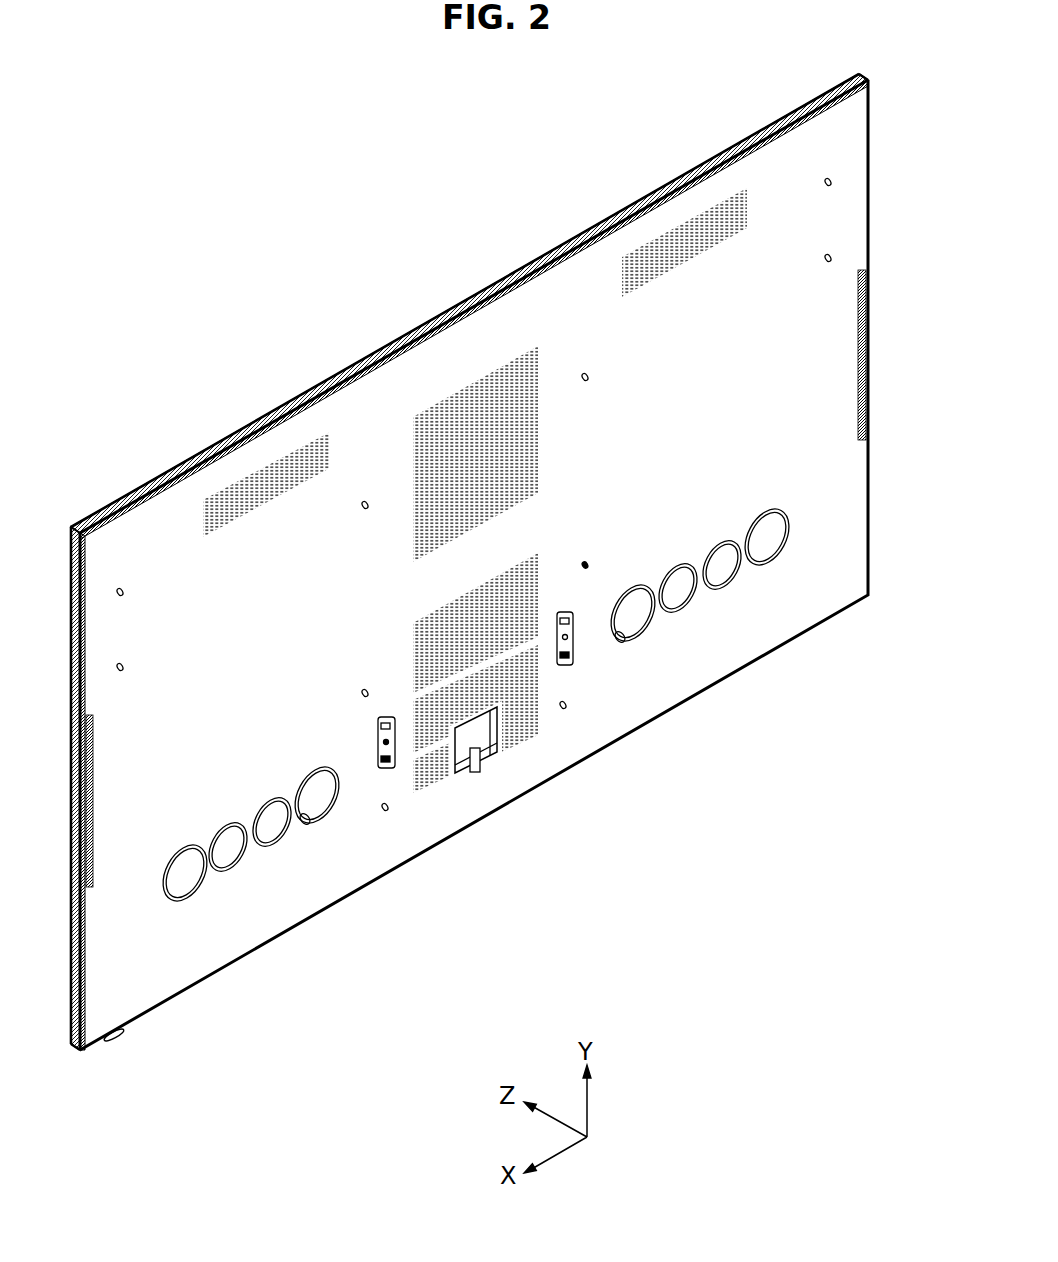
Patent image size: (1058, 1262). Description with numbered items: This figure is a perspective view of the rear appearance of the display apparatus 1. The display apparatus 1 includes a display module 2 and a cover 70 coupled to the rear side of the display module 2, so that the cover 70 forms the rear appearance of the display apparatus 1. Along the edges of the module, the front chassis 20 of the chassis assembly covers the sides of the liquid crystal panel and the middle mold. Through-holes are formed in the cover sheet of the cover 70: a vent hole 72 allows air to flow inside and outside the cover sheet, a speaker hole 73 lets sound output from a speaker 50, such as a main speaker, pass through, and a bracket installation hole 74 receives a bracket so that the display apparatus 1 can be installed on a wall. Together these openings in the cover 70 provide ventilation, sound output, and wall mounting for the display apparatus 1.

The display apparatus 1 is at (203, 238).
The display module 2 is at (590, 216).
The front chassis 20 is at (423, 330).
The speaker 50 is at (315, 803).
The cover 70 is at (815, 377).
The vent hole 72 is at (537, 426).
The speaker hole 73 is at (310, 824).
The bracket installation hole 74 is at (366, 512).